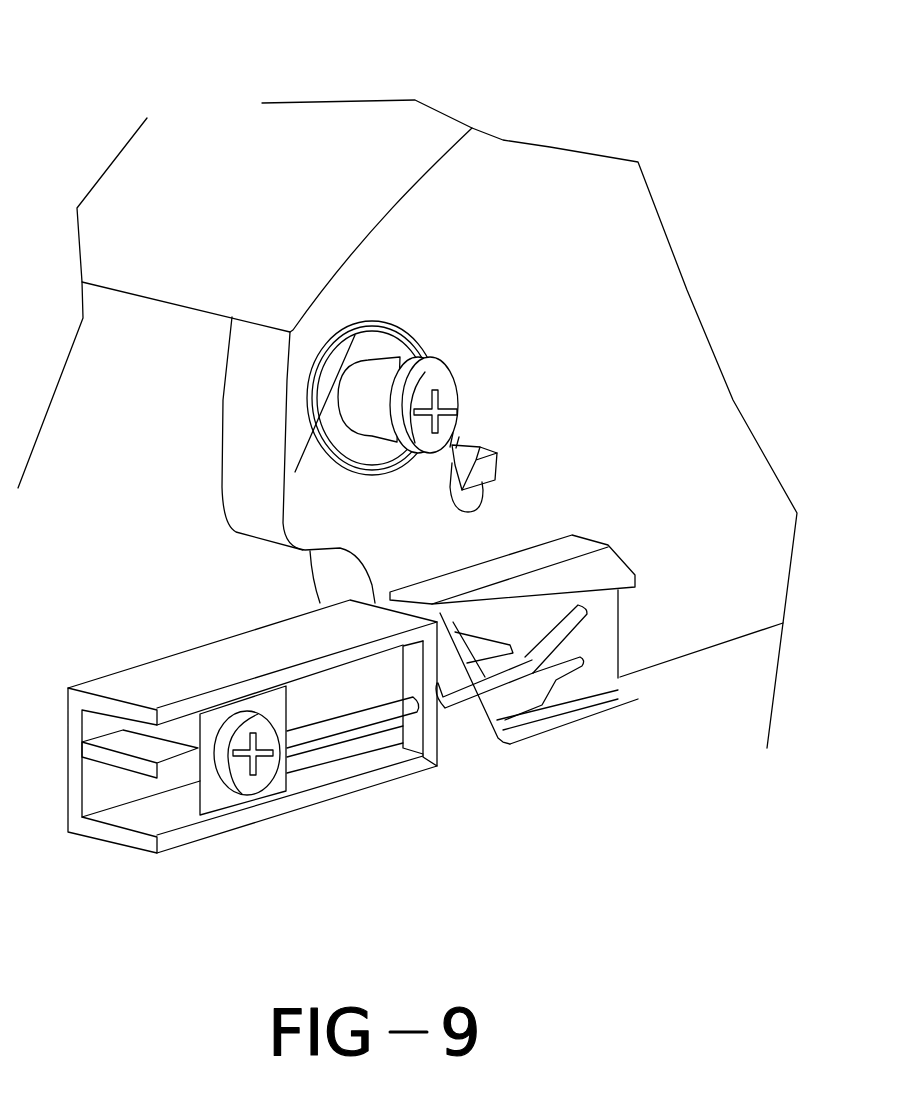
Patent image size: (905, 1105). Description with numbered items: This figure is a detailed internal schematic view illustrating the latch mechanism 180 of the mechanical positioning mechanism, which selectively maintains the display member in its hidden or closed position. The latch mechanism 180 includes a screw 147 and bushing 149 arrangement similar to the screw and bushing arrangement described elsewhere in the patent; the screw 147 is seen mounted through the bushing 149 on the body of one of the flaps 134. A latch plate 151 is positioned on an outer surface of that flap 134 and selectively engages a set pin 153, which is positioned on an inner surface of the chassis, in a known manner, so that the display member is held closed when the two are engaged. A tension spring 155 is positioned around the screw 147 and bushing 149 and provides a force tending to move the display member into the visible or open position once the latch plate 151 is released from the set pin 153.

The flap 134 is at (570, 260).
The screw 147 is at (440, 370).
The bushing 149 is at (413, 323).
The latch plate 151 is at (633, 690).
The set pin 153 is at (373, 717).
The tension spring 155 is at (452, 444).
The latch mechanism 180 is at (328, 681).